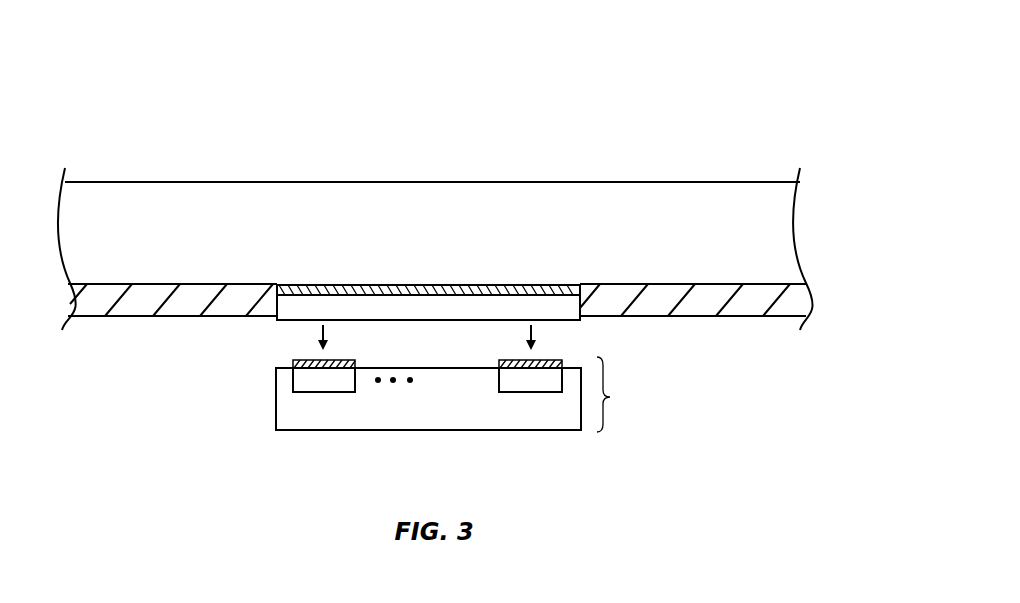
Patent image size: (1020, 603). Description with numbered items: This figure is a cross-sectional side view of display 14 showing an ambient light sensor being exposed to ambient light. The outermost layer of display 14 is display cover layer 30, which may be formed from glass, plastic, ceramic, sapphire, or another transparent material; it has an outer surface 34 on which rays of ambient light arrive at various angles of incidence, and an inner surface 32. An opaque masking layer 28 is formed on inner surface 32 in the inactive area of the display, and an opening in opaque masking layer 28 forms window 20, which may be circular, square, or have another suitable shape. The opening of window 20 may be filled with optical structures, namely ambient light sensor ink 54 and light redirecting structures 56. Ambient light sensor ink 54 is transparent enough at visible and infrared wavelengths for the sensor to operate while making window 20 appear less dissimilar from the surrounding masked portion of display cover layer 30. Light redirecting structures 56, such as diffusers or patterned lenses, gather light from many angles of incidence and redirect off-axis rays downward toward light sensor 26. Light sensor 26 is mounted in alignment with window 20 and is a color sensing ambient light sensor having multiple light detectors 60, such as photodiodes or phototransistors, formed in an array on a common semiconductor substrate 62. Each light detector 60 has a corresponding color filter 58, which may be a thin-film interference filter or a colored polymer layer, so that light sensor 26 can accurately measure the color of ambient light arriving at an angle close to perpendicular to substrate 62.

The display 14 is at (645, 74).
The window 20 is at (277, 273).
The light sensor 26 is at (455, 394).
The opaque masking layer 28 is at (133, 305).
The display cover layer 30 is at (777, 233).
The inner surface 32 is at (100, 284).
The outer surface 34 is at (665, 182).
The ambient light sensor ink 54 is at (568, 287).
The light redirecting structures 56 is at (288, 310).
The color filter 58 is at (350, 358).
The light detectors 60 is at (325, 385).
The substrate 62 is at (425, 417).